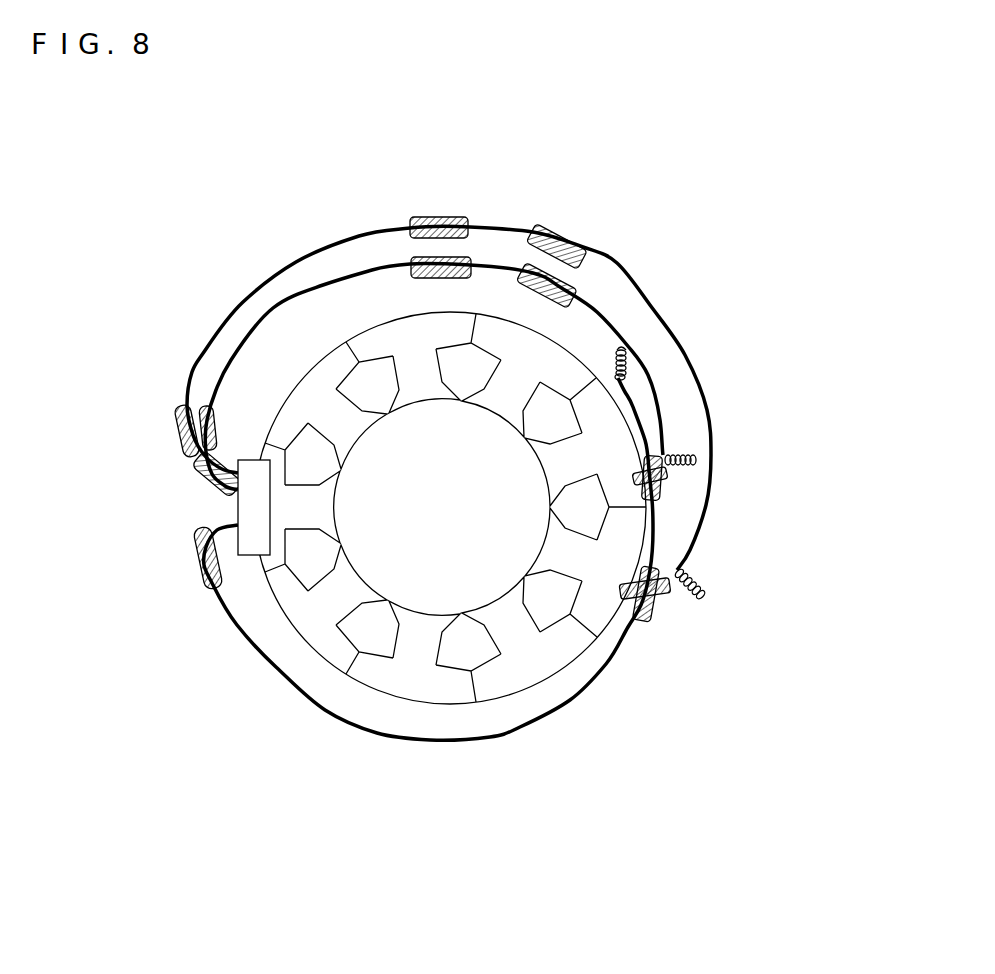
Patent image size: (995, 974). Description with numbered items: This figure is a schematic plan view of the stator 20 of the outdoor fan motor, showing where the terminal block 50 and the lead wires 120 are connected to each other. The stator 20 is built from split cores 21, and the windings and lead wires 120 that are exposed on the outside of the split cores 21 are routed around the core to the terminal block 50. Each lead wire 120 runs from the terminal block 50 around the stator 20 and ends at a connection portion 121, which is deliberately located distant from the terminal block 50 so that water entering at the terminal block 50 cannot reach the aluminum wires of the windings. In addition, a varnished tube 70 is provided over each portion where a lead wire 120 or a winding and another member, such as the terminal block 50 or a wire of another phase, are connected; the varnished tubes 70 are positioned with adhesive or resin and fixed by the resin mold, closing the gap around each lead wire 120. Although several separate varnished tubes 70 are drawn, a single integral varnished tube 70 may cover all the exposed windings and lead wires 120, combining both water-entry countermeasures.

The stator 20 is at (232, 292).
The split cores 21 is at (437, 693).
The terminal block 50 is at (247, 556).
The varnished tube 70 is at (440, 217).
The lead wire 120 is at (292, 305).
The connection portion 121 is at (615, 360).